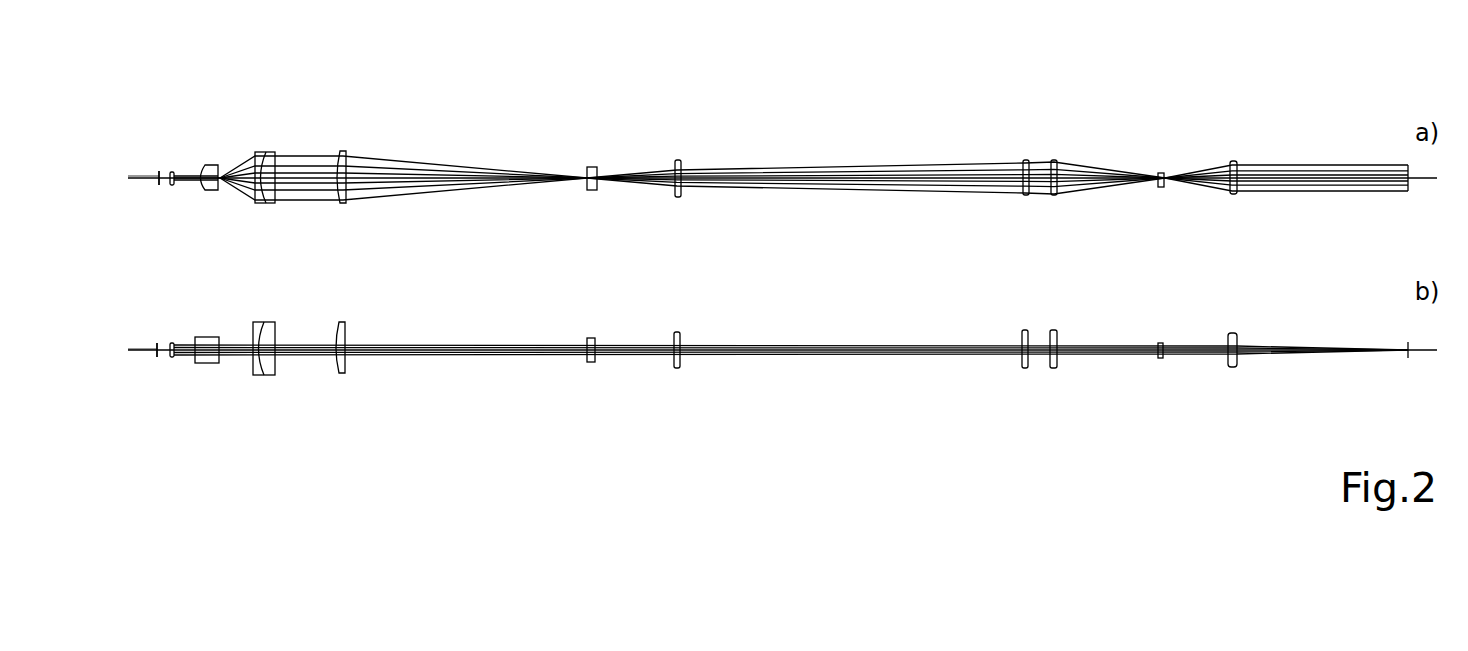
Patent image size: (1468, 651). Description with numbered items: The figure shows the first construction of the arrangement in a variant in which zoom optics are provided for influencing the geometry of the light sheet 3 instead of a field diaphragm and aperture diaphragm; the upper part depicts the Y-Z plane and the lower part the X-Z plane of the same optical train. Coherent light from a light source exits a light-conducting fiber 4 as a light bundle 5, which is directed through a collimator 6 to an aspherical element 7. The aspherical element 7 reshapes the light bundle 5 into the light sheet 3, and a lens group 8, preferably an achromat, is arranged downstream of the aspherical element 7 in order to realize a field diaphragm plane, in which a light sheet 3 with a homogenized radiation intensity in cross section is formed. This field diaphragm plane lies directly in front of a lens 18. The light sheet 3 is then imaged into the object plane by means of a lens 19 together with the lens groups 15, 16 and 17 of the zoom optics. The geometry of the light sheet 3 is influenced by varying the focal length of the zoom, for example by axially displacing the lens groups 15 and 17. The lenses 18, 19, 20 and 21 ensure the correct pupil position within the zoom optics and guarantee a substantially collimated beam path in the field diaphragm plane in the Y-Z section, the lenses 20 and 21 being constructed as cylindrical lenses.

The light sheet 3 is at (296, 193).
The light-conducting fiber 4 is at (147, 180).
The light bundle 5 is at (161, 170).
The collimator 6 is at (175, 187).
The aspherical element 7 is at (208, 165).
The lens group 8 is at (260, 203).
The lens group 15 is at (1057, 196).
The lens group 16 is at (1161, 188).
The lens group 17 is at (1238, 196).
The lens 18 is at (343, 203).
The lens 19 is at (593, 192).
The cylindrical lens 20 is at (680, 197).
The cylindrical lens 21 is at (1026, 196).